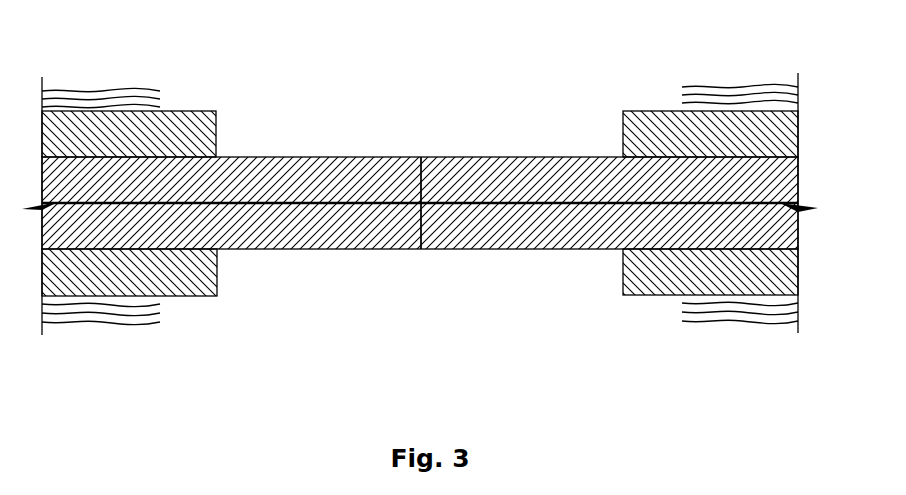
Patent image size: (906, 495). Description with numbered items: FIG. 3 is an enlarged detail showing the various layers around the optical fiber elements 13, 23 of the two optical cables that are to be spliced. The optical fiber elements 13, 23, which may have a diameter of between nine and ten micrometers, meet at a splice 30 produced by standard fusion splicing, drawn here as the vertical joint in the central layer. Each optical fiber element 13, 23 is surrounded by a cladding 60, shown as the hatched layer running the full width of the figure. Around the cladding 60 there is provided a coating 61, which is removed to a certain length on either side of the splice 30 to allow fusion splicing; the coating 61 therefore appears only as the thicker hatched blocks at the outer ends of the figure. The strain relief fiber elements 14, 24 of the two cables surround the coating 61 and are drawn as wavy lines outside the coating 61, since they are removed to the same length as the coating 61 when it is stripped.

The optical fiber element 13 is at (340, 203).
The strain relief fiber element 14 is at (88, 97).
The optical fiber element 23 is at (478, 203).
The strain relief fiber element 24 is at (750, 92).
The splice 30 is at (420, 273).
The cladding 60 is at (276, 164).
The coating 61 is at (206, 127).